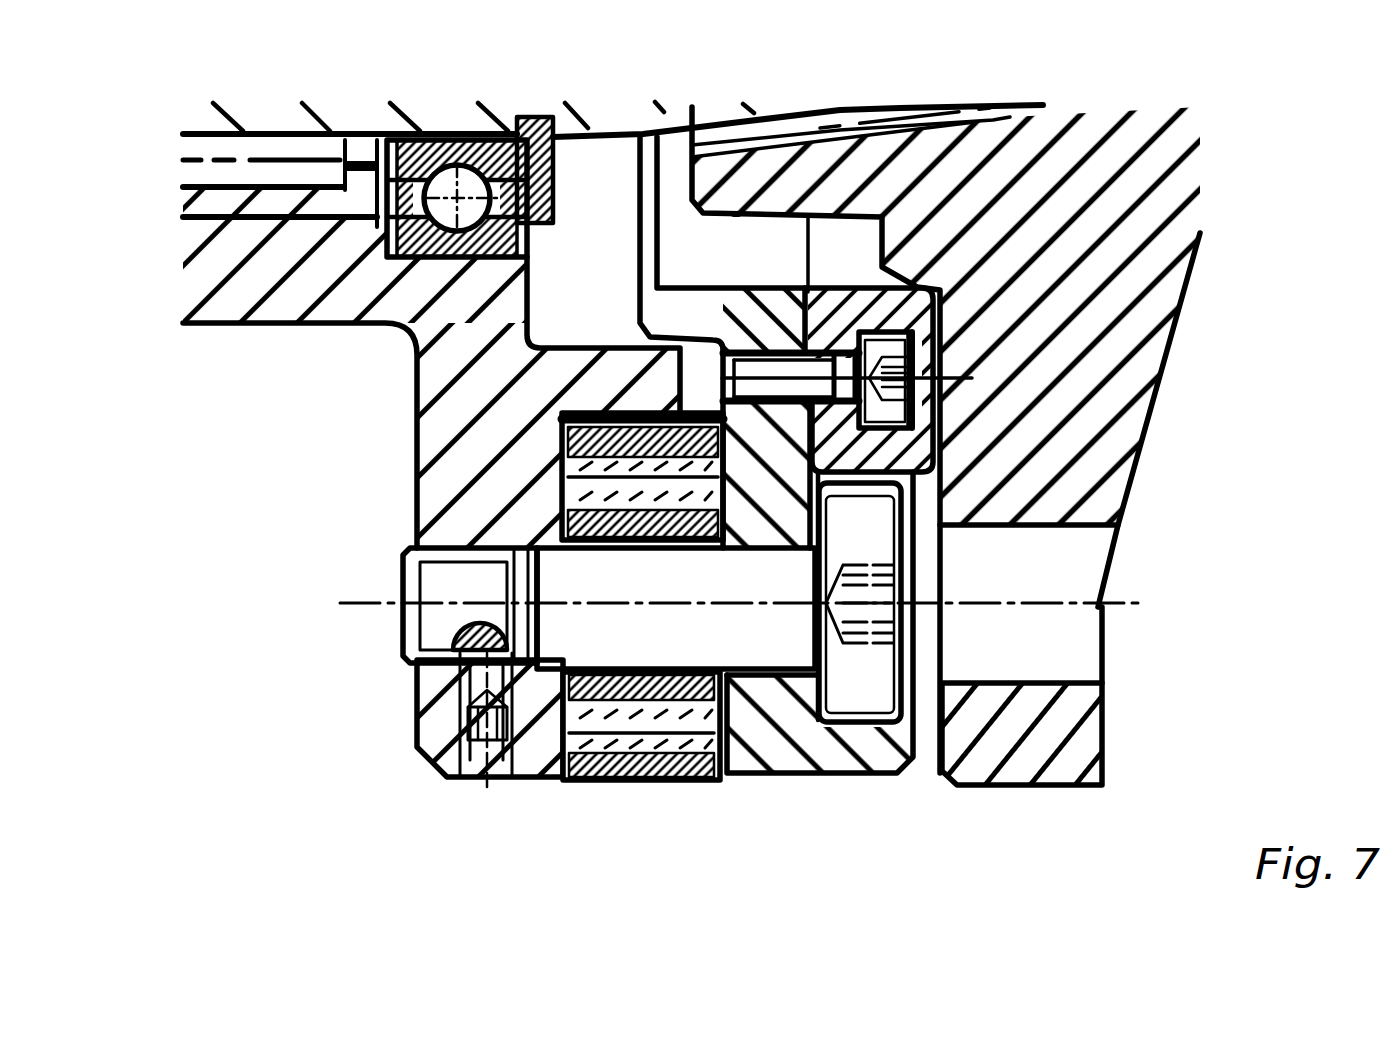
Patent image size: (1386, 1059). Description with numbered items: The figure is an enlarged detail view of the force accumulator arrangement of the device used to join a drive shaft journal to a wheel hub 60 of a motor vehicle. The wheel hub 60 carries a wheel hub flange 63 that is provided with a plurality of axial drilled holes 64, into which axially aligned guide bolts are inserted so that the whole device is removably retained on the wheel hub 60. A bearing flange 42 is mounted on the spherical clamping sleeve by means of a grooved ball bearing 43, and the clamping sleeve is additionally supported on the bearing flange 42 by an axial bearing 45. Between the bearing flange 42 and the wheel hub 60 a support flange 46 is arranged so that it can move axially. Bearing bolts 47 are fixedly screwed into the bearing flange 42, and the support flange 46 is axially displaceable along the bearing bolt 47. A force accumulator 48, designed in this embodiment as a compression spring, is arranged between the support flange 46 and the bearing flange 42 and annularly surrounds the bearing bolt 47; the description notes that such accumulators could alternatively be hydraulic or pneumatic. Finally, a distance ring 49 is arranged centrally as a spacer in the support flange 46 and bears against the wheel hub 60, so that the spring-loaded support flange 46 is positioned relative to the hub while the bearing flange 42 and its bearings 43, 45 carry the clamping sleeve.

The bearing flange 42 is at (460, 472).
The grooved ball bearing 43 is at (455, 190).
The axial bearing 45 is at (283, 197).
The support flange 46 is at (832, 750).
The bearing bolt 47 is at (758, 635).
The force accumulator 48 is at (600, 780).
The distance ring 49 is at (943, 457).
The wheel hub 60 is at (1060, 203).
The wheel hub flange 63 is at (1032, 750).
The axial drilled hole 64 is at (1083, 653).